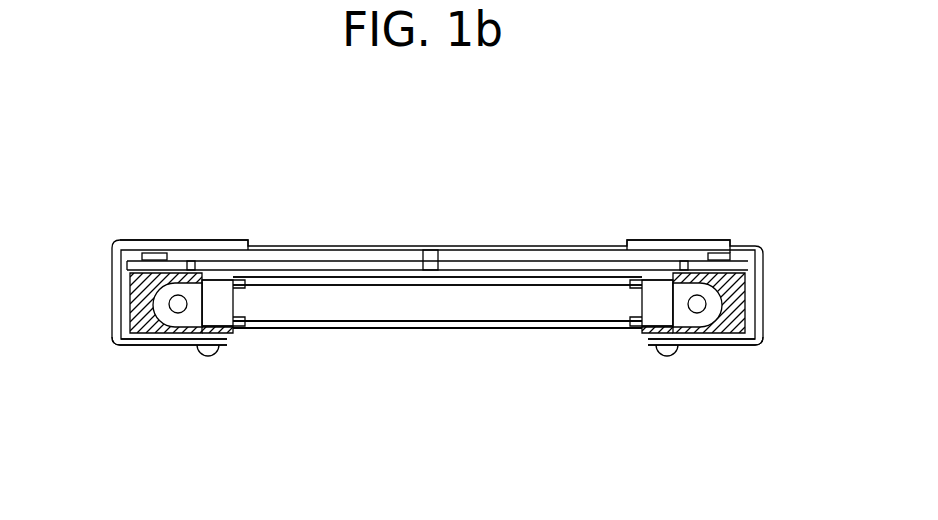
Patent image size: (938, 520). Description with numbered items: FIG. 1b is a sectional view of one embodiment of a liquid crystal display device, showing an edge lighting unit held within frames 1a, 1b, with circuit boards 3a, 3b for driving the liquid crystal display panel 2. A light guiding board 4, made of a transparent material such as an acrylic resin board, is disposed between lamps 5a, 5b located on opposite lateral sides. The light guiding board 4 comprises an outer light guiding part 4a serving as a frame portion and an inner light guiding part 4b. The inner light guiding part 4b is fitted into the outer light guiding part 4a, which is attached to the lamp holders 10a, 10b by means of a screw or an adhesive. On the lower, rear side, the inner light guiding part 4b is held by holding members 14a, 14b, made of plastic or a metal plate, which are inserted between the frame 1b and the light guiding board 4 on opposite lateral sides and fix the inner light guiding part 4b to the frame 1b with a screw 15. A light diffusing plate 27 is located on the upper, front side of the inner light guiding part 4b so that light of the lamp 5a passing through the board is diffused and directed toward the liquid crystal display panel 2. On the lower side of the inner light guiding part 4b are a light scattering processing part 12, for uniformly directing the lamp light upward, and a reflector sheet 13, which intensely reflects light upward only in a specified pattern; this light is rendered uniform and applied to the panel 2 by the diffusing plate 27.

The liquid crystal display panel 2 is at (437, 248).
The frame 1a is at (431, 200).
The frame 1b is at (447, 397).
The circuit board 3a is at (146, 205).
The circuit board 3b is at (777, 212).
The light diffusing plate 27 is at (428, 219).
The lamp holder 10a is at (129, 303).
The lamp holder 10b is at (756, 303).
The lamp 5a is at (119, 338).
The lamp 5b is at (766, 275).
The outer light guiding part 4a is at (438, 236).
The light guiding board 4 is at (212, 310).
The inner light guiding part 4b is at (437, 367).
The light scattering processing part 12 is at (402, 303).
The reflector sheet 13 is at (437, 324).
The holding member 14a is at (231, 368).
The holding member 14b is at (623, 363).
The screw 15 is at (432, 401).